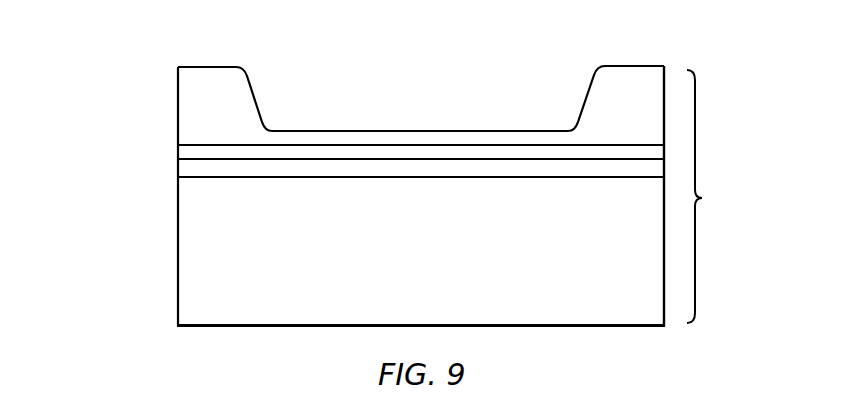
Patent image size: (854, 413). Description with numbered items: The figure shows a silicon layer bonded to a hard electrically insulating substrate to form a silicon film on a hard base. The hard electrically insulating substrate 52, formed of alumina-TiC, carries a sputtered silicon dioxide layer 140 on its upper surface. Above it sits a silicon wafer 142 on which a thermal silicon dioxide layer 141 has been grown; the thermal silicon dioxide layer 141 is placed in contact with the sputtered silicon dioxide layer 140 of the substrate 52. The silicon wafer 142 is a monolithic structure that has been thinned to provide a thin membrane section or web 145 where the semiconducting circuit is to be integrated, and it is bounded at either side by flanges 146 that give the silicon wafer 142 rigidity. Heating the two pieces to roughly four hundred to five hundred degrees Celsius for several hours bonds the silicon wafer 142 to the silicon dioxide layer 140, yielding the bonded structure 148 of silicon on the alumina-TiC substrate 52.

The hard electrically insulating substrate 52 is at (437, 250).
The sputtered silicon dioxide layer 140 is at (190, 170).
The thermal silicon dioxide layer 141 is at (202, 153).
The silicon wafer 142 is at (201, 127).
The thin membrane section or web 145 is at (438, 135).
The flanges 146 is at (202, 87).
The bonded structure 148 is at (721, 196).